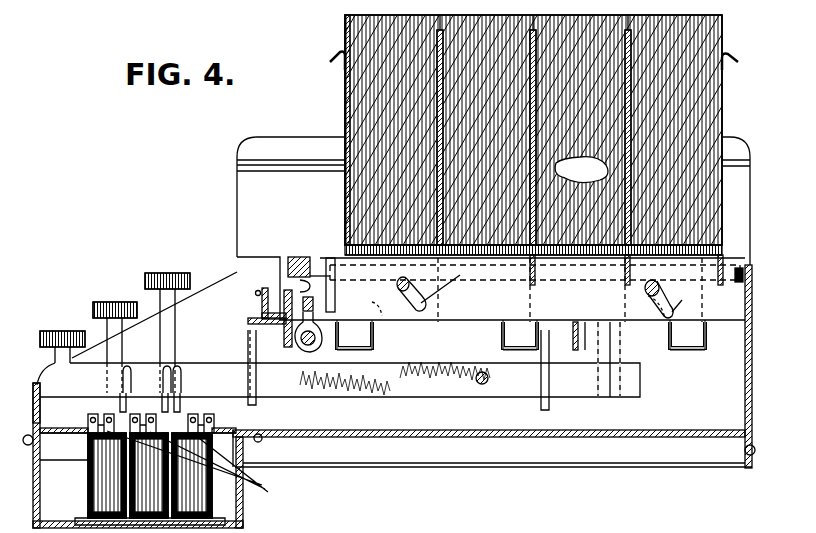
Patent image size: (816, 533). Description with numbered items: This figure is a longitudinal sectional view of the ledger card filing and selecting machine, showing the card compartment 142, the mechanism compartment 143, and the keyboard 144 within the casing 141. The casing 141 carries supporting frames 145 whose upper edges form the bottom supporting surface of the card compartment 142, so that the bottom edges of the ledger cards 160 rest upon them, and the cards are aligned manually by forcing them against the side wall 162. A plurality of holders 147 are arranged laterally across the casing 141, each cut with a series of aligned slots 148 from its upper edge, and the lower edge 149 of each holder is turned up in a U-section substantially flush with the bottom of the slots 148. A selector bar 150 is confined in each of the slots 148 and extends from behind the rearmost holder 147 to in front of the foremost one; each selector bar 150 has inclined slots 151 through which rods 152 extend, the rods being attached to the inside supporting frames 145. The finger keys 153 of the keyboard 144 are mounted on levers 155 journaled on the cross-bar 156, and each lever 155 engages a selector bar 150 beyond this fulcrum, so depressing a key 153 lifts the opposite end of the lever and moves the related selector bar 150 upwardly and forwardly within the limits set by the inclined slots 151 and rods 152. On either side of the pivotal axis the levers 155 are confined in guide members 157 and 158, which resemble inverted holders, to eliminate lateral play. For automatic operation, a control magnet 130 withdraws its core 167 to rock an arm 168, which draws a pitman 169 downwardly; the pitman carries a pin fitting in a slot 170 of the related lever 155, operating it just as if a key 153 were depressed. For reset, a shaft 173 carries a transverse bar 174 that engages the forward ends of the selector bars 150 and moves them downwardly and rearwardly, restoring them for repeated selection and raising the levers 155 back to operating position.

The control magnet 130 is at (182, 492).
The casing 141 is at (405, 440).
The card compartment 142 is at (581, 170).
The mechanism compartment 143 is at (698, 409).
The keyboard 144 is at (115, 322).
The supporting frame 145 is at (222, 293).
The holder 147 is at (505, 338).
The slot 148 is at (384, 316).
The edge 149 is at (345, 322).
The selector bar 150 is at (655, 330).
The inclined slot 151 is at (460, 275).
The rod 152 is at (408, 280).
The finger key 153 is at (147, 280).
The key lever 155 is at (395, 390).
The cross-bar 156 is at (481, 386).
The guide member 157 is at (257, 404).
The guide member 158 is at (550, 410).
The ledger card 160 is at (392, 28).
The side wall 162 is at (238, 236).
The core 167 is at (199, 467).
The arm 168 is at (183, 412).
The pitman 169 is at (120, 405).
The slot 170 is at (128, 380).
The shaft 173 is at (300, 352).
The bar 174 is at (292, 300).